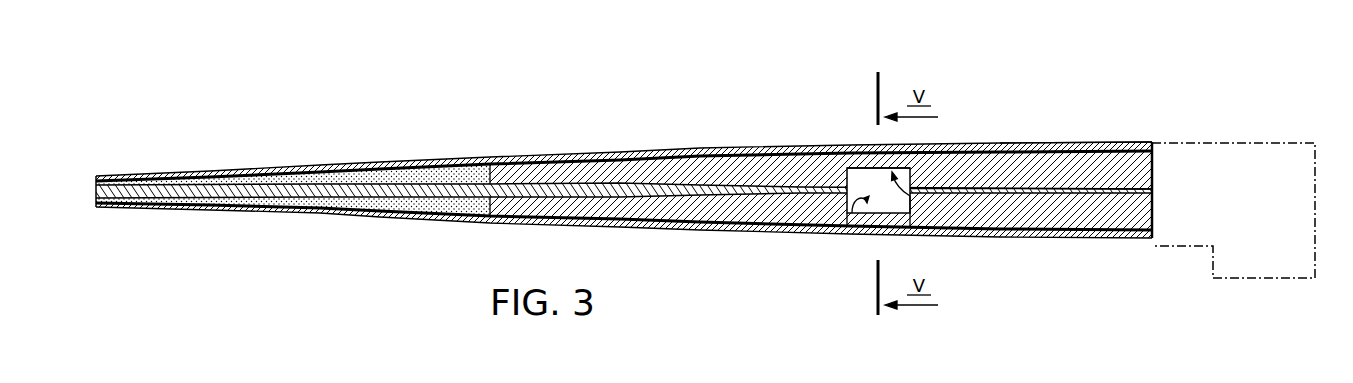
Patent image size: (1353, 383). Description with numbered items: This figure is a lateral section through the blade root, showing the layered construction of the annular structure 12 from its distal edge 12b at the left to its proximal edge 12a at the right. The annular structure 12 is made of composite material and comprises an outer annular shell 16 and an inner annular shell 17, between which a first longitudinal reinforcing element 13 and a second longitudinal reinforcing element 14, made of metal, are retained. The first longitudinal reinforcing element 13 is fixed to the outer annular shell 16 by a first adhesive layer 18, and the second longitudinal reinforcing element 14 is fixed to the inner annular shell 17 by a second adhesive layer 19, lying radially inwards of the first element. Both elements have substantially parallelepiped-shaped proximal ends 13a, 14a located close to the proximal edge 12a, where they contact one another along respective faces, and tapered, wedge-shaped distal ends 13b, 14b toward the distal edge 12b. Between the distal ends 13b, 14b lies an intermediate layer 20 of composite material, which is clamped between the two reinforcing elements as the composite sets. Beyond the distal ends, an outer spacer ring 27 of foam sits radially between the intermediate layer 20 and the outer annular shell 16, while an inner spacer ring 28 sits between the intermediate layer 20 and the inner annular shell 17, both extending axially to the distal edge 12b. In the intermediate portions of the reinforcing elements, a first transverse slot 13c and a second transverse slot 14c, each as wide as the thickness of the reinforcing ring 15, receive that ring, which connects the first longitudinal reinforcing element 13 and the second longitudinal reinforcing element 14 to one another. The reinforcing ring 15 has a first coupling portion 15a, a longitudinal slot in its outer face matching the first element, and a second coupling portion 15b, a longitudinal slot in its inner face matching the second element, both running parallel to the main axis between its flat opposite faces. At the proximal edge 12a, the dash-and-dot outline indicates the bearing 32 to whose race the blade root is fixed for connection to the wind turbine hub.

The annular structure 12 is at (215, 213).
The proximal edge 12a is at (1154, 206).
The distal edge 12b is at (93, 185).
The first longitudinal reinforcing elements 13 is at (745, 170).
The proximal ends 13a is at (1086, 173).
The distal ends 13b is at (605, 163).
The first transverse slots 13c is at (953, 185).
The second longitudinal reinforcing elements 14 is at (793, 208).
The proximal ends 14a is at (1098, 213).
The distal ends 14b is at (660, 221).
The second transverse slots 14c is at (852, 213).
The reinforcing ring 15 is at (877, 213).
The first coupling portions 15a is at (869, 169).
The second coupling portions 15b is at (898, 223).
The outer annular shell 16 is at (573, 157).
The inner annular shell 17 is at (500, 222).
The first adhesive layer 18 is at (1120, 143).
The second adhesive layer 19 is at (703, 220).
The intermediate layer 20 is at (347, 192).
The outer spacer ring 27 is at (446, 176).
The inner spacer ring 28 is at (458, 206).
The bearing 32 is at (1280, 160).